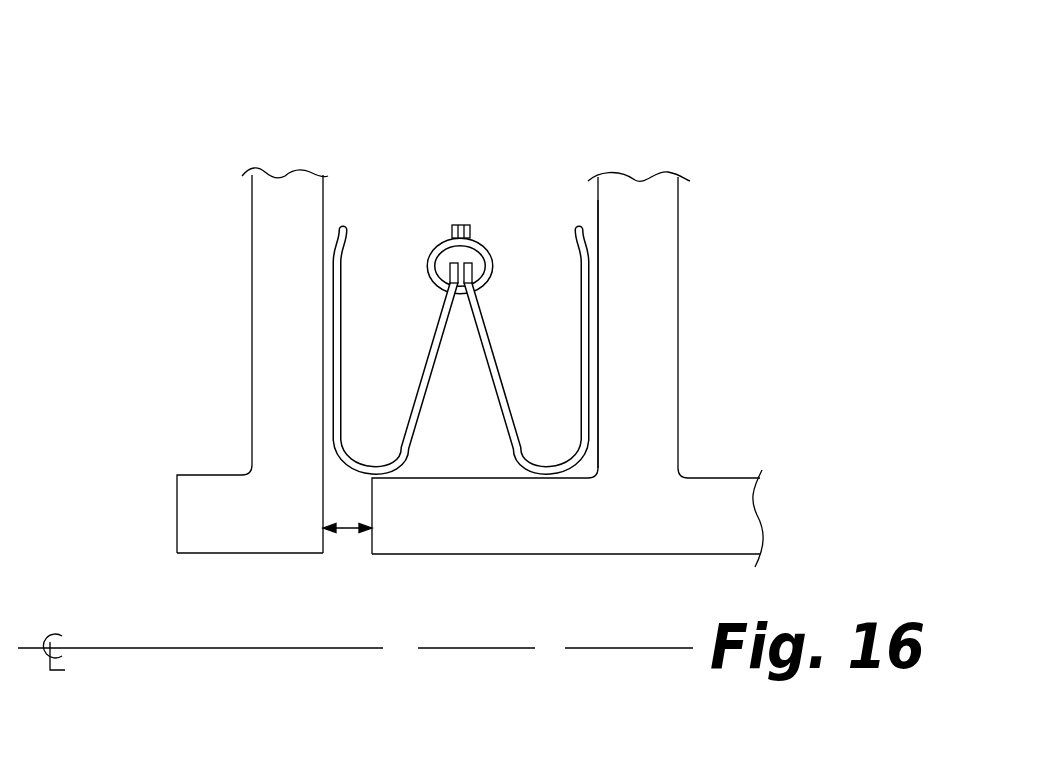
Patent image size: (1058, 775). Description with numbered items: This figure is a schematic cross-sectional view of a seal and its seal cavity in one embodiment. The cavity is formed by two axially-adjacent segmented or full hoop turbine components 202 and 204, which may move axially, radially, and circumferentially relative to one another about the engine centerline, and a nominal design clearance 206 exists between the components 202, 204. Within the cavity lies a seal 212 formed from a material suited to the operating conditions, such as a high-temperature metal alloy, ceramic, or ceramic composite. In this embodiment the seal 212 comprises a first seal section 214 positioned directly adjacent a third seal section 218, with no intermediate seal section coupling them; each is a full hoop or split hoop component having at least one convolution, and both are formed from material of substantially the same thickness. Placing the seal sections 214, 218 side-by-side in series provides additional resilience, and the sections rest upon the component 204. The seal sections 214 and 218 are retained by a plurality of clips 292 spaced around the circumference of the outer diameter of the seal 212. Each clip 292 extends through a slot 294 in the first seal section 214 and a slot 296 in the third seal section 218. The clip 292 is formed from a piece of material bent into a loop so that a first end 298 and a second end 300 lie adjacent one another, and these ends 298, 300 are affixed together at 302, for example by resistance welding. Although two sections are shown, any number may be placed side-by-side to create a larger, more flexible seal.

The turbine component 202 is at (214, 402).
The turbine component 204 is at (589, 404).
The nominal design clearance 206 is at (343, 533).
The seal 212 is at (469, 245).
The first seal section 214 is at (327, 357).
The third seal section 218 is at (600, 345).
The clip 292 is at (490, 248).
The slot 294 is at (447, 293).
The slot 296 is at (475, 293).
The first end 298 is at (449, 228).
The second end 300 is at (468, 226).
The affixing location 302 is at (443, 235).